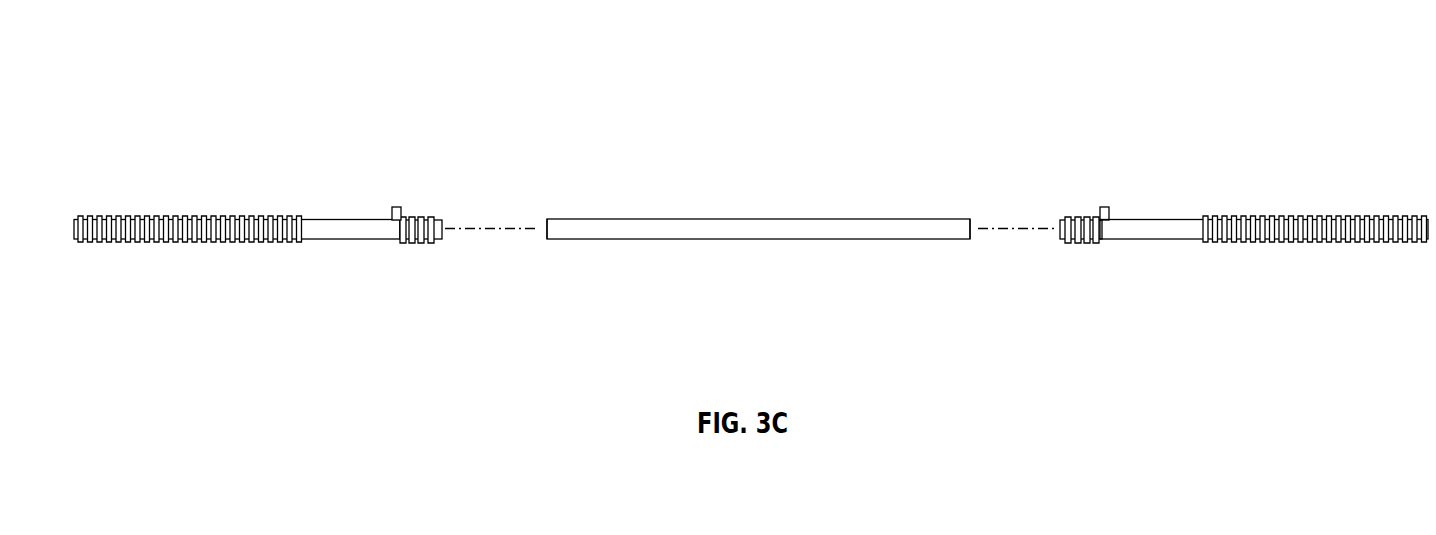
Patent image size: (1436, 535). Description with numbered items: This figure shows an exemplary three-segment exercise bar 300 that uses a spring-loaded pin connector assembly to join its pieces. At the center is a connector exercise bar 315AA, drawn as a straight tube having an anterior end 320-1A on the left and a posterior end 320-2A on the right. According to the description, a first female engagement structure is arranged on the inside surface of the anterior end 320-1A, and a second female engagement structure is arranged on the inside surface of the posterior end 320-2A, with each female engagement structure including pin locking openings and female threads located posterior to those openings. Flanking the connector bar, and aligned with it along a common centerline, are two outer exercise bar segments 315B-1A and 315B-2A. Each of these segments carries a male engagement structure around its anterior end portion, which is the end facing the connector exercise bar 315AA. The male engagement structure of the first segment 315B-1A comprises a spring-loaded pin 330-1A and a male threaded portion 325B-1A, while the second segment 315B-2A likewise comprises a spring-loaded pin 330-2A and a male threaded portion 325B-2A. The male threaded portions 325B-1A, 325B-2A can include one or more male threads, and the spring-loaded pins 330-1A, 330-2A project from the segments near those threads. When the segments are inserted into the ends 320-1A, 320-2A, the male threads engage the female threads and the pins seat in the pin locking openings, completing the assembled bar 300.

The tie rod assembly 300 is at (277, 57).
The exercise bar segment 315B-1A is at (332, 240).
The exercise bar segment 315B-2A is at (1123, 240).
The connector exercise bar 315AA is at (757, 218).
The anterior end 320-1A is at (568, 240).
The posterior end 320-2A is at (943, 240).
The male threaded portion 325B-1A is at (433, 217).
The male threaded portion 325B-2A is at (1080, 217).
The spring-loaded pin 330-1A is at (394, 207).
The spring-loaded pin 330-2A is at (1108, 207).